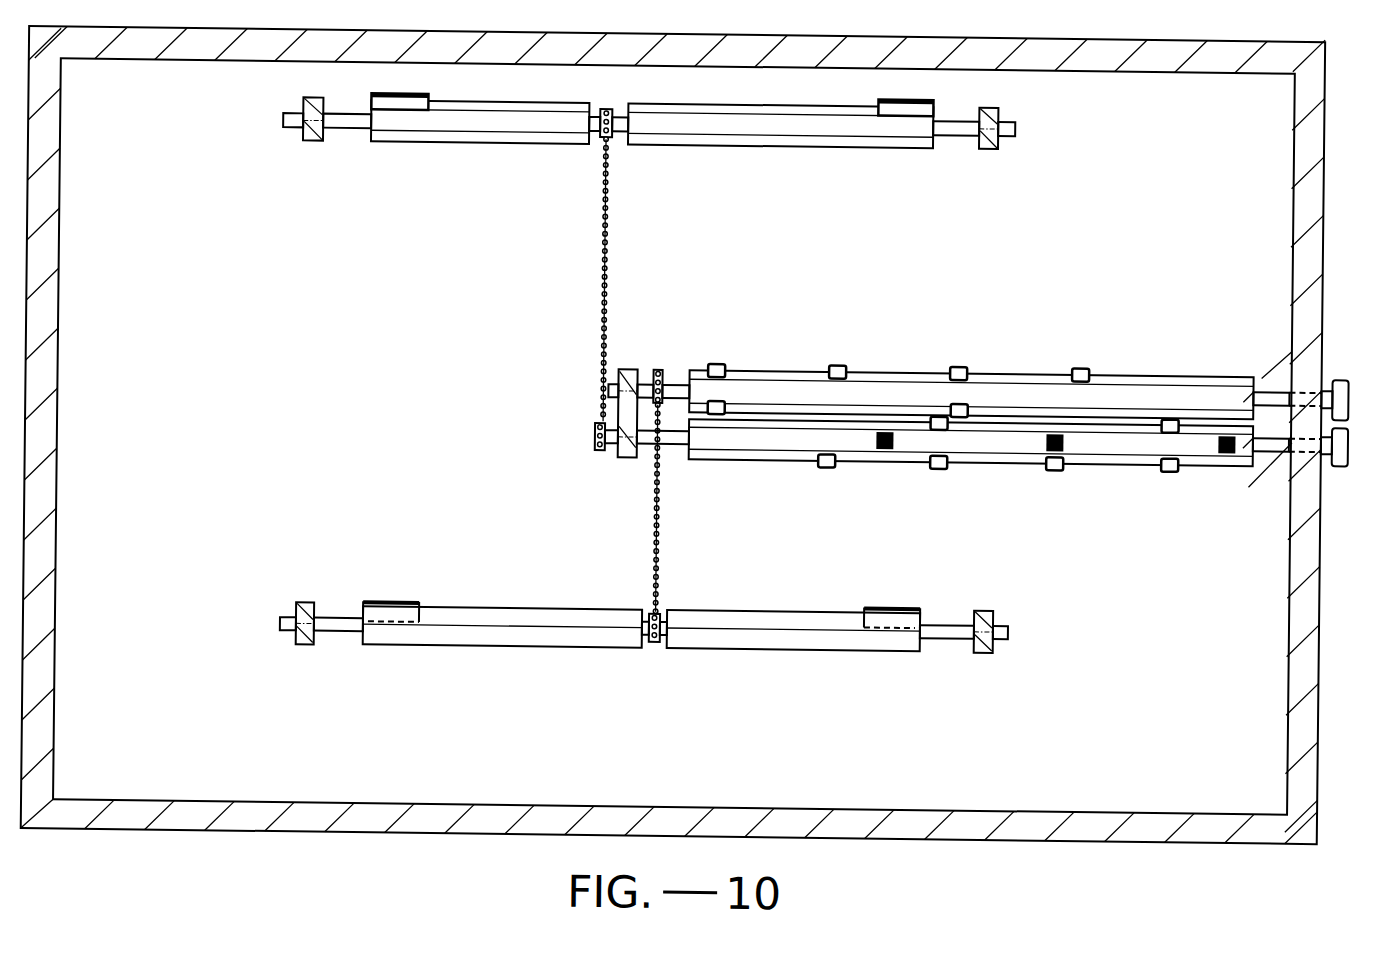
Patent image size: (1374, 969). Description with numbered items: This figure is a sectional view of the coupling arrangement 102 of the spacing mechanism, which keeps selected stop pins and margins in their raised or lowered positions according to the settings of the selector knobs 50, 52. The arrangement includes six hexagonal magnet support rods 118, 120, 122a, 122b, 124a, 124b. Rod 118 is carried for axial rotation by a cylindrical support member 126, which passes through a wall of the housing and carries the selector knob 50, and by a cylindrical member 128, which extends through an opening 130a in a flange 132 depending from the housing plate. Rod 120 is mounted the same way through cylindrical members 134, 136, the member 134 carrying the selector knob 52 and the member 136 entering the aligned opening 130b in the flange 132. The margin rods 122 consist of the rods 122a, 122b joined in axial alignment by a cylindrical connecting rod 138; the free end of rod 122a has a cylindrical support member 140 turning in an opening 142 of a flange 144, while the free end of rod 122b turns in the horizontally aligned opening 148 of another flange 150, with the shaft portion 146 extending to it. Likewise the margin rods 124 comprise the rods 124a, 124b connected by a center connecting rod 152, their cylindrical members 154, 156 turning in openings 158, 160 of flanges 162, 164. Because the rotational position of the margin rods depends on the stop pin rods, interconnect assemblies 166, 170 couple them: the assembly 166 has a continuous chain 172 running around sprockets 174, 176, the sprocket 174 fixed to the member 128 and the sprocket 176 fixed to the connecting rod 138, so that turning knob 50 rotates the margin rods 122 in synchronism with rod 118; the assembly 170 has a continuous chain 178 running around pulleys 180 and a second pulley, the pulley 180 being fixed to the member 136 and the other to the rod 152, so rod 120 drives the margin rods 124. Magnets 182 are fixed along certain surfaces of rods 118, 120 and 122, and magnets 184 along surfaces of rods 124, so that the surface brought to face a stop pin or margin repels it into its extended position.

The selector knob 50 is at (1340, 460).
The selector knob 52 is at (1337, 372).
The coupling arrangement 102 is at (280, 396).
The magnet support rod 118 is at (958, 461).
The magnet support rod 120 is at (897, 377).
The margin rods 122 is at (649, 154).
The magnet supporting rod 122a is at (772, 139).
The magnet supporting rod 122b is at (526, 138).
The margin rods 124 is at (637, 621).
The magnet supporting rod 124a is at (762, 617).
The magnet supporting rod 124b is at (567, 613).
The cylindrical support member 126 is at (1275, 439).
The cylindrical member 128 is at (683, 441).
The opening 130a is at (625, 453).
The opening 130b is at (610, 388).
The flange 132 is at (629, 370).
The cylindrical member 134 is at (1265, 381).
The cylindrical member 136 is at (683, 387).
The cylindrical connecting rod 138 is at (594, 130).
The cylindrical support member 140 is at (952, 123).
The opening 142 is at (997, 124).
The flange 144 is at (987, 145).
The shaft 146 is at (342, 130).
The opening 148 is at (297, 130).
The flange 150 is at (308, 145).
The center connecting rod 152 is at (664, 645).
The cylindrical member 154 is at (952, 648).
The cylindrical member 156 is at (344, 636).
The opening 158 is at (995, 604).
The opening 160 is at (300, 646).
The flange 162 is at (997, 642).
The flange 164 is at (302, 609).
The interconnect assembly 166 is at (598, 266).
The interconnect assembly 170 is at (656, 513).
The continuous chain 172 is at (600, 319).
The pulley 174 is at (596, 438).
The pulley 176 is at (607, 109).
The continuous chain 178 is at (661, 560).
The pulley 180 is at (657, 369).
The magnets 182 is at (406, 98).
The magnets 184 is at (402, 607).